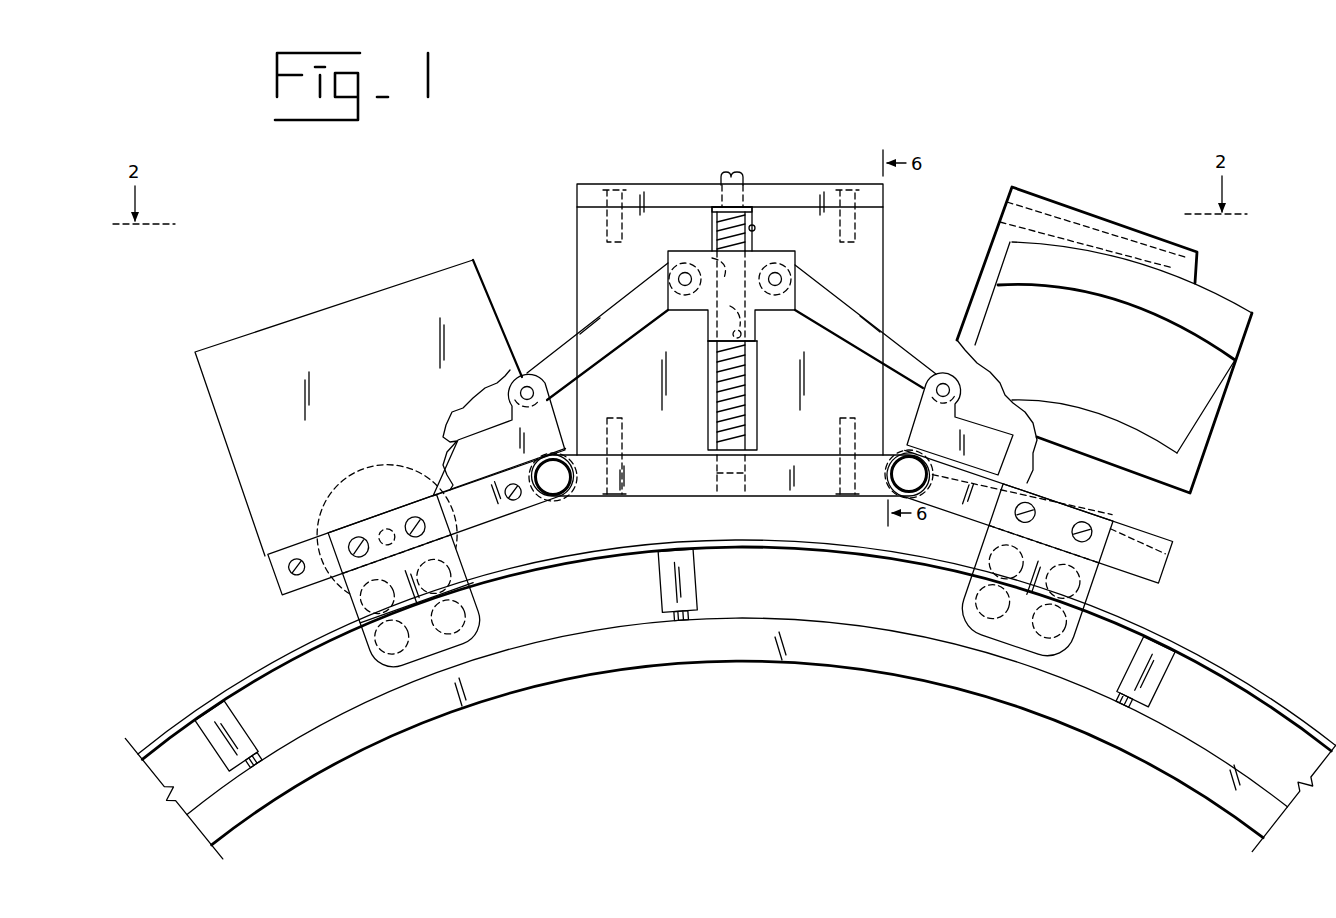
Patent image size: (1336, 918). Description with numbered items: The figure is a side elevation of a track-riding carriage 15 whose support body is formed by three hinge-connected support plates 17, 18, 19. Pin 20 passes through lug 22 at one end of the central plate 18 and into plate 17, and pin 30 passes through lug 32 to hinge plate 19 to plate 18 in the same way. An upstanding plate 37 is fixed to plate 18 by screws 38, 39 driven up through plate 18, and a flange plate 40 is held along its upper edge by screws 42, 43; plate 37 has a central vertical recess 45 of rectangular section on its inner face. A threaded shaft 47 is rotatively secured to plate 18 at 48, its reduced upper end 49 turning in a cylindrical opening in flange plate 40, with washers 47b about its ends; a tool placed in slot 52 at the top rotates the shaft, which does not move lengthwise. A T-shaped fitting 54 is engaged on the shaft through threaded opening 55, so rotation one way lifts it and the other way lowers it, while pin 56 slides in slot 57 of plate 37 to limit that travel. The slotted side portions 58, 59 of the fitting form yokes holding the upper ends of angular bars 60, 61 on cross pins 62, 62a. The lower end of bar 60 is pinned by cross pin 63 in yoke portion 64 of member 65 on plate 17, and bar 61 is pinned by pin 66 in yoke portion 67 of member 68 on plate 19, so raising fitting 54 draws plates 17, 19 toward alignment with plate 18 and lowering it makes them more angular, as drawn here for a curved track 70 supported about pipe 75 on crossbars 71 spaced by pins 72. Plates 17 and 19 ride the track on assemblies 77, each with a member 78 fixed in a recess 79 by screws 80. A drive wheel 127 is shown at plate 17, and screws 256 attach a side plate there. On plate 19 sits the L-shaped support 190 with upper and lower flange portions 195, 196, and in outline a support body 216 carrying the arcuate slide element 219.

The carriage 15 is at (204, 457).
The support plate 17 is at (280, 572).
The support plate 18 is at (671, 497).
The support plate 19 is at (1165, 562).
The pin 20 is at (556, 497).
The lug 22 is at (543, 498).
The pin 30 is at (905, 490).
The lug 32 is at (933, 492).
The upstanding plate 37 is at (885, 236).
The screw 38 is at (625, 437).
The screw 39 is at (838, 438).
The flange plate 40 is at (885, 196).
The screw 42 is at (620, 202).
The screw 43 is at (870, 190).
The vertical recess 45 is at (753, 226).
The threaded shaft 47 is at (746, 380).
The washers 47b is at (722, 210).
The securing point 48 is at (748, 463).
The reduced upper end 49 is at (743, 178).
The slot 52 is at (735, 176).
The fitting 54 is at (768, 252).
The threaded opening 55 is at (705, 250).
The pin 56 is at (758, 334).
The slot 57 is at (755, 322).
The side portion 58 is at (668, 262).
The side portion 59 is at (797, 264).
The angular bar 60 is at (610, 347).
The angular bar 61 is at (846, 300).
The cross pin 62 is at (684, 288).
The cross pin 62a is at (785, 282).
The cross pin 63 is at (528, 387).
The yoke portion 64 is at (544, 386).
The member 65 is at (547, 412).
The pin 66 is at (943, 384).
The yoke portion 67 is at (928, 378).
The member 68 is at (920, 418).
The curved track 70 is at (1210, 662).
The crossbar 71 is at (238, 722).
The pin 72 is at (253, 762).
The pipe 75 is at (843, 620).
The assembly 77 is at (346, 610).
The member 78 is at (470, 608).
The recess 79 is at (320, 527).
The screws 80 is at (410, 522).
The drive wheel 127 is at (460, 542).
The support 190 is at (1118, 503).
The upper flange portion 195 is at (1199, 262).
The lower flange portion 196 is at (1120, 517).
The support body 216 is at (1240, 352).
The slide element 219 is at (1195, 414).
The screws 256 is at (290, 567).